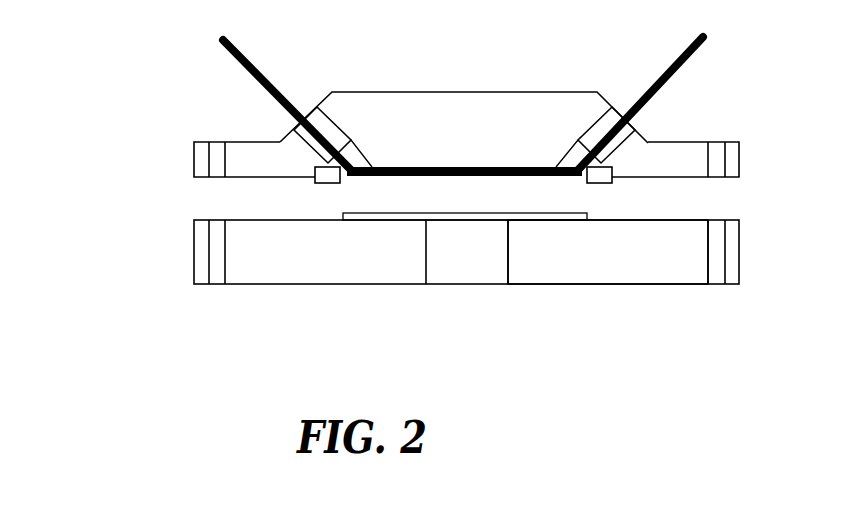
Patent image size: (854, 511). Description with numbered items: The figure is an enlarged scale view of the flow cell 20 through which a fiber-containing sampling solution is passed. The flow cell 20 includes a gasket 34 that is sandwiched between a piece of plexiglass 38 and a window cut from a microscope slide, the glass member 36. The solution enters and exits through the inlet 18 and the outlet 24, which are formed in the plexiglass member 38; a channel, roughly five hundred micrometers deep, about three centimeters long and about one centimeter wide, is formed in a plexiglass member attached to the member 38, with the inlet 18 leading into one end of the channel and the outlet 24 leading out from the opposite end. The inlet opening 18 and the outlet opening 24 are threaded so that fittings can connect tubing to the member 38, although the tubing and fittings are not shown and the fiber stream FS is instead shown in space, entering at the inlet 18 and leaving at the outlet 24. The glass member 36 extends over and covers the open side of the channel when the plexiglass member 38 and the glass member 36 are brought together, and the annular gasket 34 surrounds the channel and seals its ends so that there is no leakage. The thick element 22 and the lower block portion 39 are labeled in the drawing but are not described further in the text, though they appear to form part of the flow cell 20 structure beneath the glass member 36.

The fiber stream FS is at (255, 67).
The inlet 18 is at (294, 128).
The outlet 24 is at (636, 122).
The plexiglass member 38 is at (462, 92).
The light conductor / detection zone 22 is at (475, 166).
The flow cell 20 is at (380, 318).
The housing block 39 is at (598, 267).
The gasket 34 is at (345, 183).
The glass member 36 is at (330, 214).